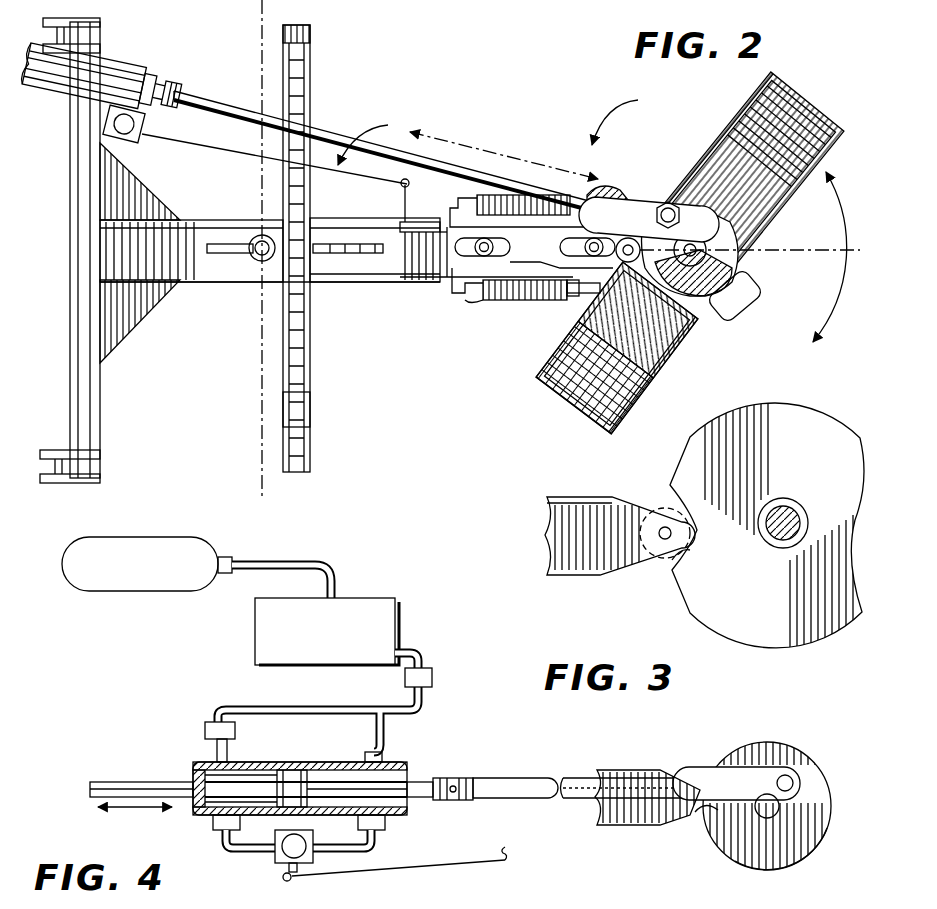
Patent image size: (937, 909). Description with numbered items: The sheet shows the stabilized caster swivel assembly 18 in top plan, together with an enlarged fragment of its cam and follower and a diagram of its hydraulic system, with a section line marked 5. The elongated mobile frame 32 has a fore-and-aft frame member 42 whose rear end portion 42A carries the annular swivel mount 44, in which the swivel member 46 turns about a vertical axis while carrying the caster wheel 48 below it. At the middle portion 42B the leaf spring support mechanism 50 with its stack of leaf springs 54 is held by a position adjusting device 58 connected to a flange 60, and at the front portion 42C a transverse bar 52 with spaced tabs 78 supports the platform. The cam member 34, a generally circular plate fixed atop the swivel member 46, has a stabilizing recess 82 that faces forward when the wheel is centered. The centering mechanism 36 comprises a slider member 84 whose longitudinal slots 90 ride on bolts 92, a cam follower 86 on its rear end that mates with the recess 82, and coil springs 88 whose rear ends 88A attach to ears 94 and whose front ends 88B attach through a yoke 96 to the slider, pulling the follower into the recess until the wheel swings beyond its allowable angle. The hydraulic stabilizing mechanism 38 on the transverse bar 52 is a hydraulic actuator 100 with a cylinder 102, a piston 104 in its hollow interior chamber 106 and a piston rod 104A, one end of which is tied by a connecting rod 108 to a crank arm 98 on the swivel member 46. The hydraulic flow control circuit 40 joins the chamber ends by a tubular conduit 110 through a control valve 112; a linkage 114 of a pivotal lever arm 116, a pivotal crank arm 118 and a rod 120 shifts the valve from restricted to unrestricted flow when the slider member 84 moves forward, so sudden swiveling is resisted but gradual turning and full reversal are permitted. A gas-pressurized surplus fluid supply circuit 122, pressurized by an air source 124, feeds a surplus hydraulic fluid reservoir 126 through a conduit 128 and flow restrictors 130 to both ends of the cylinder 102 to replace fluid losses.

In FIG. 2, the section line 5- 5 is at (282, 16).
In FIG. 2, the stabilized caster swivel assembly 18 is at (628, 116).
In FIG. 2, the elongated mobile frame 32 is at (500, 140).
In FIG. 2, the cam member 34 is at (735, 236).
In FIG. 4, the cam member 34 is at (732, 753).
In FIG. 3, the centering mechanism 36 is at (822, 431).
In FIG. 2, the hydraulic stabilizing mechanism 38 is at (132, 61).
In FIG. 4, the hydraulic stabilizing mechanism 38 is at (419, 768).
In FIG. 4, the hydraulic flow control circuit 40 is at (204, 836).
In FIG. 2, the frame member 42 is at (392, 285).
In FIG. 2, the rear end portion of the frame member 42A is at (617, 348).
In FIG. 2, the middle portion of the frame member 42B is at (346, 283).
In FIG. 2, the front portion of the frame member 42C is at (178, 264).
In FIG. 2, the annular swivel mount 44 is at (752, 170).
In FIG. 2, the swivel member 46 is at (730, 313).
In FIG. 3, the swivel member 46 is at (790, 500).
In FIG. 4, the swivel member 46 is at (768, 818).
In FIG. 2, the caster wheel 48 is at (576, 405).
In FIG. 2, the leaf spring support mechanism 50 is at (314, 392).
In FIG. 2, the transverse bar 52 is at (101, 431).
In FIG. 2, the stack of leaf springs 54 is at (311, 362).
In FIG. 2, the position adjusting device 58 is at (258, 263).
In FIG. 2, the flange 60 is at (330, 244).
In FIG. 2, the spaced tabs 78 is at (84, 17).
In FIG. 2, the stabilizing recess 82 is at (684, 293).
In FIG. 3, the stabilizing recess 82 is at (671, 565).
In FIG. 4, the stabilizing recess 82 is at (706, 826).
In FIG. 2, the slider member 84 is at (562, 298).
In FIG. 3, the slider member 84 is at (575, 497).
In FIG. 4, the slider member 84 is at (600, 826).
In FIG. 2, the cam follower 86 is at (668, 206).
In FIG. 3, the cam follower 86 is at (656, 509).
In FIG. 4, the cam follower 86 is at (690, 819).
In FIG. 2, the coil springs 88 is at (556, 176).
In FIG. 2, the rear ends of the biasing springs 88A is at (465, 298).
In FIG. 2, the front ends of the biasing springs 88B is at (580, 302).
In FIG. 2, the longitudinal slots 90 is at (560, 249).
In FIG. 2, the bolts 92 is at (486, 196).
In FIG. 2, the ears 94 is at (612, 195).
In FIG. 2, the yoke 96 is at (440, 283).
In FIG. 2, the crank arm 98 is at (717, 142).
In FIG. 4, the crank arm 98 is at (795, 842).
In FIG. 2, the hydraulic actuator 100 is at (45, 88).
In FIG. 4, the hydraulic actuator 100 is at (200, 752).
In FIG. 4, the cylinder 102 is at (196, 766).
In FIG. 4, the piston 104 is at (293, 772).
In FIG. 2, the piston rod 104A is at (168, 84).
In FIG. 4, the piston rod 104A is at (125, 750).
In FIG. 4, the hollow interior chamber 106 is at (252, 778).
In FIG. 2, the connecting rod 108 is at (338, 137).
In FIG. 4, the connecting rod 108 is at (549, 778).
In FIG. 4, the tubular conduit 110 is at (227, 830).
In FIG. 2, the control valve 112 is at (134, 140).
In FIG. 4, the control valve 112 is at (313, 833).
In FIG. 2, the linkage 114 is at (373, 136).
In FIG. 4, the pivotal lever arm 116 is at (285, 871).
In FIG. 2, the pivotal crank arm 118 is at (406, 200).
In FIG. 2, the rod 120 is at (206, 151).
In FIG. 4, the rod 120 is at (453, 859).
In FIG. 4, the gas-pressurized surplus hydraulic fluid supply circuit 122 is at (295, 556).
In FIG. 4, the air source 124 is at (220, 556).
In FIG. 4, the surplus hydraulic fluid reservoir 126 is at (378, 598).
In FIG. 4, the conduit 128 is at (358, 713).
In FIG. 4, the flow restrictors 130 is at (432, 678).